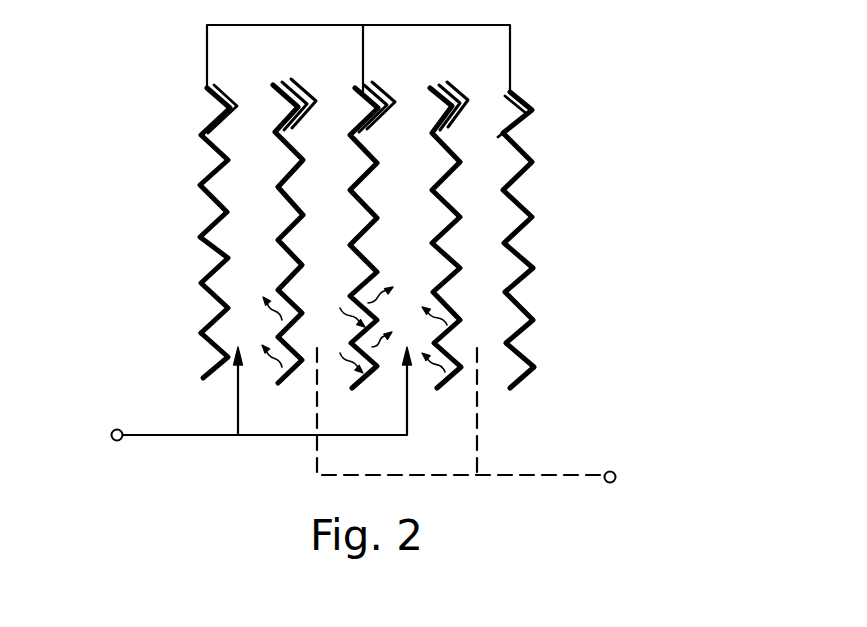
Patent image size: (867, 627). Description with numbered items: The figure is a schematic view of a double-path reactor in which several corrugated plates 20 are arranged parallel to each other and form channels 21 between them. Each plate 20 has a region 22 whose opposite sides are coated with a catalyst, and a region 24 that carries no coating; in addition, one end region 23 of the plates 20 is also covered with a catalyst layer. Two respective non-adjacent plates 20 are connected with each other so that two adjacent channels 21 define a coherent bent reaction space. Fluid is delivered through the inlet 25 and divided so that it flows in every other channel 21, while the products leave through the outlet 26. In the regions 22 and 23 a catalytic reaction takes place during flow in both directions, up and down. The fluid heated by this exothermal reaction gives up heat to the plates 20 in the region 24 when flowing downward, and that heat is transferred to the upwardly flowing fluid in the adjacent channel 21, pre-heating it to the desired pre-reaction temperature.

The plate 20 is at (532, 370).
The channel 21 is at (485, 308).
The catalyst-coated region 22 is at (190, 183).
The end region with catalyst layer 23 is at (207, 145).
The uncoated region 24 is at (198, 328).
The inlet 25 is at (108, 436).
The outlet 26 is at (617, 479).